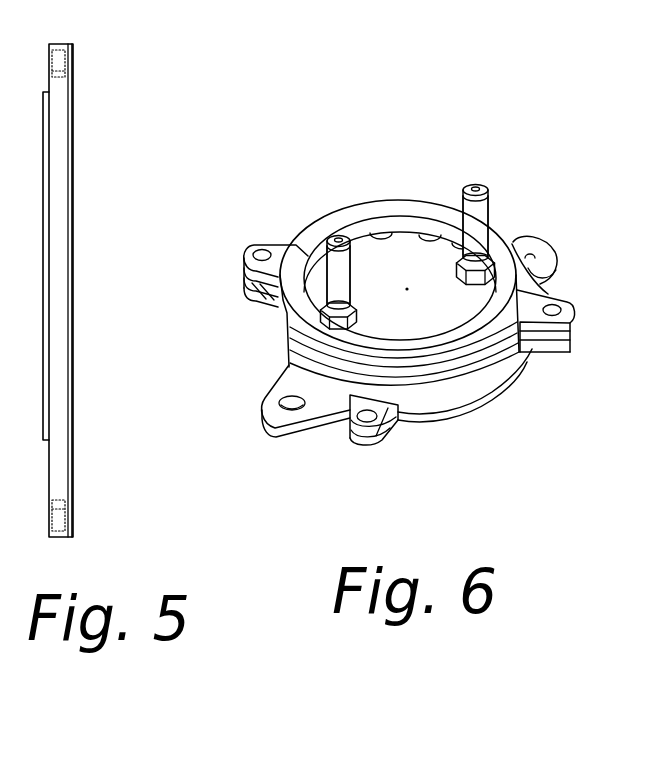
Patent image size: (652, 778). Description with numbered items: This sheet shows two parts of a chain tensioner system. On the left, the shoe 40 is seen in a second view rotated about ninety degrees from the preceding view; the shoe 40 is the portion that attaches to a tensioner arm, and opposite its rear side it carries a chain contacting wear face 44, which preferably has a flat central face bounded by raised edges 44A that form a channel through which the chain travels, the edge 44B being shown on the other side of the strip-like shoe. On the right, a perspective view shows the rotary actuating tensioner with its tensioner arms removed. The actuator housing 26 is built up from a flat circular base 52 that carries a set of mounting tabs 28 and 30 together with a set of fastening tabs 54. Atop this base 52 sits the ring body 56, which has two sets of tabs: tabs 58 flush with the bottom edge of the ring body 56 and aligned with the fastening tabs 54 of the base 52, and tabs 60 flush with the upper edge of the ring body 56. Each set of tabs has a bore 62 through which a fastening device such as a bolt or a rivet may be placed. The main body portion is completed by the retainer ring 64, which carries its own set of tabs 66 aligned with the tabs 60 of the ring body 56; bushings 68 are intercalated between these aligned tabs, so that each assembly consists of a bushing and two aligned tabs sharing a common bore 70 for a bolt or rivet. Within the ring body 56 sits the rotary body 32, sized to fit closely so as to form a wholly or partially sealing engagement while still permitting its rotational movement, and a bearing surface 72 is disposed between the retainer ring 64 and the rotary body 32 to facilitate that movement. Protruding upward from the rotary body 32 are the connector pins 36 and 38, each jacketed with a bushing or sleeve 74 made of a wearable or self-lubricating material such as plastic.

In FIG. 6, the actuator housing 26 is at (444, 441).
In FIG. 6, the mounting tab 28 is at (544, 256).
In FIG. 6, the mounting tab 30 is at (270, 401).
In FIG. 6, the rotary body 32 is at (406, 290).
In FIG. 6, the connector pin 36 is at (336, 237).
In FIG. 6, the connector pin 38 is at (477, 186).
In FIG. 5, the shoe 40 is at (80, 105).
In FIG. 5, the chain contacting wear face 44 is at (57, 156).
In FIG. 5, the raised edge 44A is at (47, 189).
In FIG. 5, the strip layer 44B is at (72, 227).
In FIG. 6, the flat circular base 52 is at (457, 414).
In FIG. 6, the fastening tab 54 is at (353, 446).
In FIG. 6, the ring body 56 is at (487, 378).
In FIG. 6, the tab 58 is at (388, 412).
In FIG. 6, the tab 60 is at (259, 296).
In FIG. 6, the bore 62 is at (377, 444).
In FIG. 6, the retainer ring 64 is at (376, 210).
In FIG. 6, the tab 66 is at (279, 252).
In FIG. 6, the bushing 68 is at (250, 287).
In FIG. 6, the common bore 70 is at (252, 257).
In FIG. 6, the bearing surface 72 is at (415, 233).
In FIG. 6, the bushing or sleeve 74 is at (480, 212).